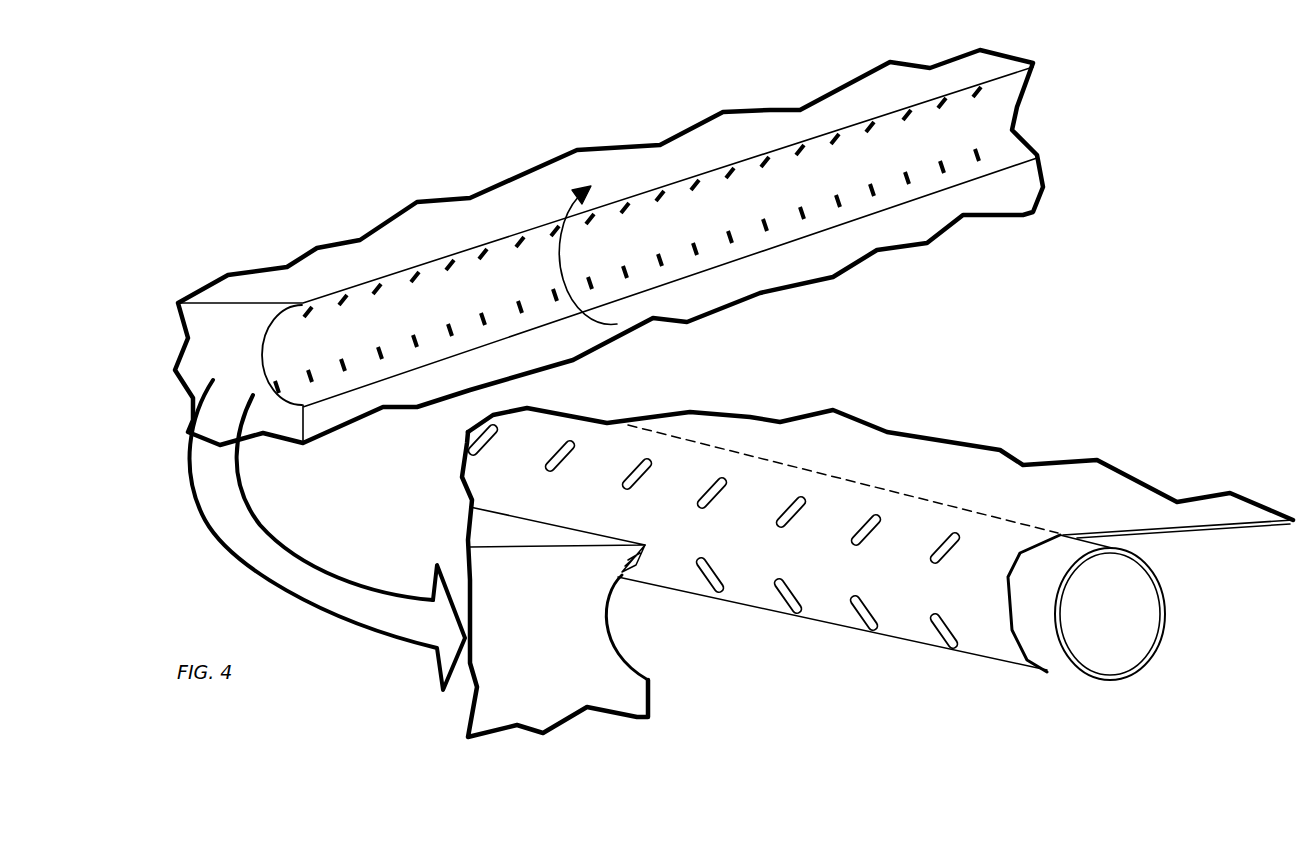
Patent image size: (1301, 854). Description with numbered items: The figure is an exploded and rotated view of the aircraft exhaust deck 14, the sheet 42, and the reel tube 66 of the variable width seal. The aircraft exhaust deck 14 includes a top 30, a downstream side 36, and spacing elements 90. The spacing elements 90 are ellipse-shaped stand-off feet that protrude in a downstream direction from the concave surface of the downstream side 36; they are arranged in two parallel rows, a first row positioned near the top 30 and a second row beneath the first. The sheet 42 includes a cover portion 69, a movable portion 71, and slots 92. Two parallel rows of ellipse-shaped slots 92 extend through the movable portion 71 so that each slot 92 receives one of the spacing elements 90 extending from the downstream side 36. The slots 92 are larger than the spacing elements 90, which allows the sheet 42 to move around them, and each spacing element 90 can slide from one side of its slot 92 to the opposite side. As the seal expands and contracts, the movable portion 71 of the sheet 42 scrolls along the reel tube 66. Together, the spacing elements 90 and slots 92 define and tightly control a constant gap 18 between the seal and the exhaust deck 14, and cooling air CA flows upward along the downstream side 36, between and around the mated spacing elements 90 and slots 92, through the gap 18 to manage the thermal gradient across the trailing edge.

The aircraft exhaust deck 14 is at (365, 233).
The top 30 is at (254, 303).
The downstream side 36 is at (263, 338).
The spacing elements 90 is at (311, 377).
The cooling air CA is at (555, 267).
The gap 18 is at (599, 611).
The sheet 42 is at (894, 466).
The cover portion 69 is at (970, 467).
The movable portion 71 is at (1003, 553).
The reel tube 66 is at (1073, 660).
The slots 92 is at (720, 492).